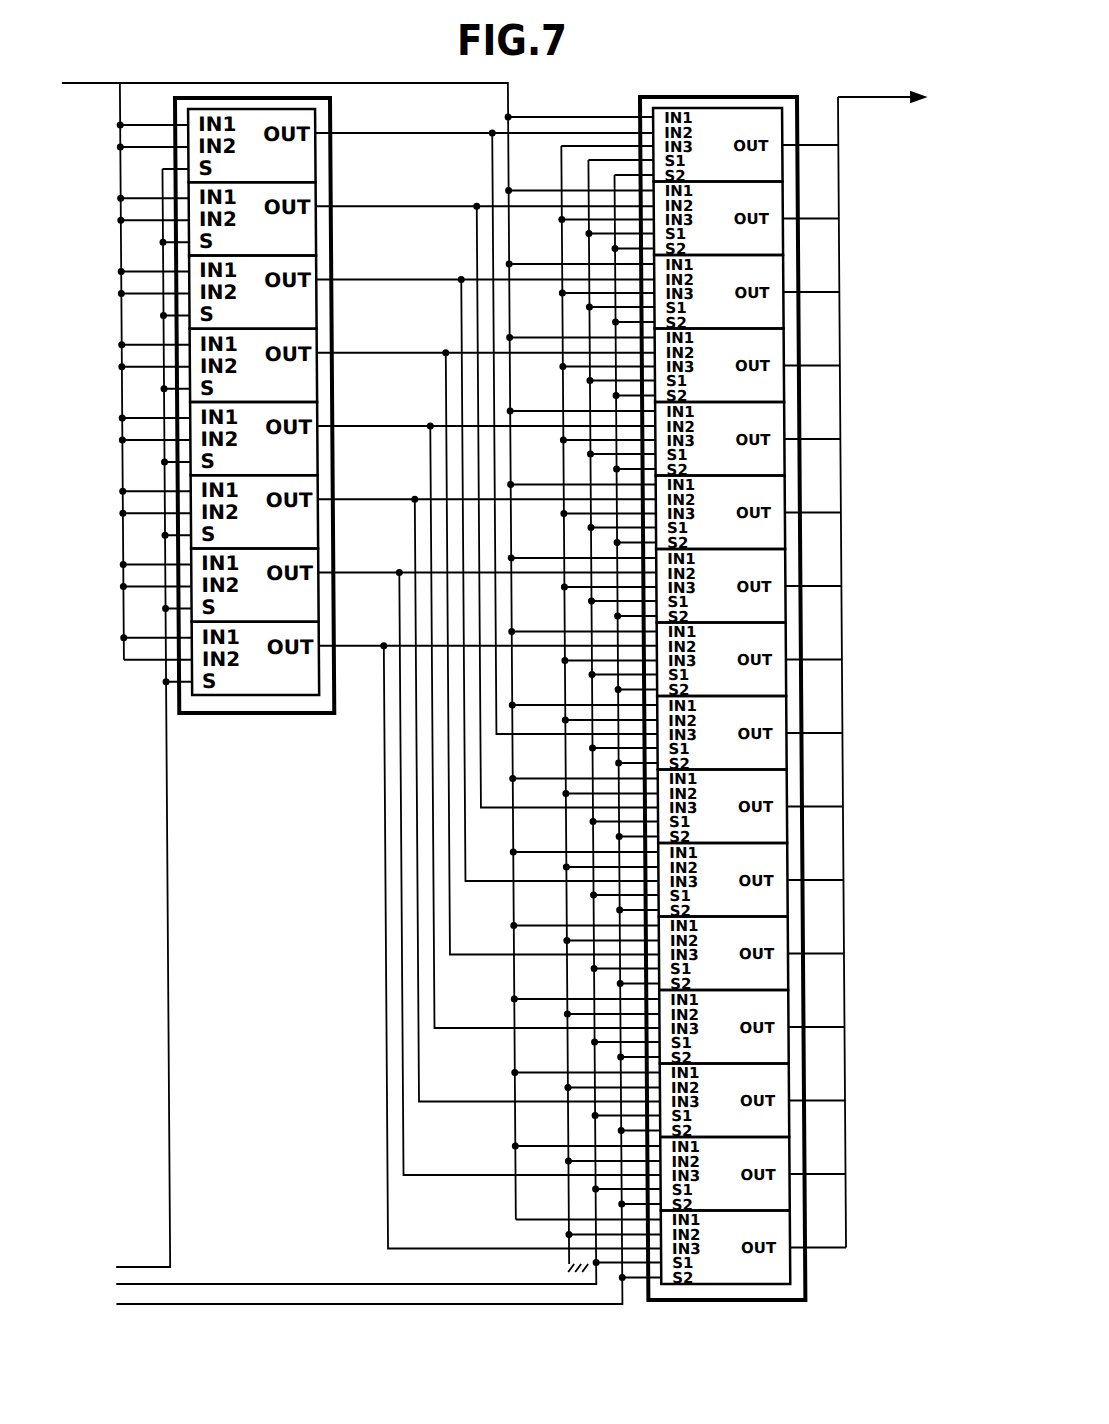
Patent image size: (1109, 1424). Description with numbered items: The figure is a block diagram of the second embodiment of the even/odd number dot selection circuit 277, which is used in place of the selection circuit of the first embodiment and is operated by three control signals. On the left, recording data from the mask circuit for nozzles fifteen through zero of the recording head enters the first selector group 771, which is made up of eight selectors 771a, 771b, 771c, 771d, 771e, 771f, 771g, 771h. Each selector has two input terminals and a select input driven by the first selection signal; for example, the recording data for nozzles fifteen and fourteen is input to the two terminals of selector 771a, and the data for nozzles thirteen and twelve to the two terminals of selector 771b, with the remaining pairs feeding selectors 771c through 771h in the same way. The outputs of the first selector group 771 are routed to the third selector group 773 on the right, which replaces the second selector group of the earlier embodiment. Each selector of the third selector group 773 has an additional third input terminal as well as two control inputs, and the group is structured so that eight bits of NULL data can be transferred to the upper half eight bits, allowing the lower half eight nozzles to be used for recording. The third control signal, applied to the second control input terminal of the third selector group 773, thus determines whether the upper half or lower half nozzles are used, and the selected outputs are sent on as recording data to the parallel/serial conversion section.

The even/odd number dot selection circuit 277 is at (645, 77).
The first selector group 771 is at (252, 713).
The selector 771a is at (315, 163).
The selector 771b is at (315, 236).
The selector 771c is at (315, 310).
The selector 771d is at (315, 383).
The selector 771e is at (315, 456).
The selector 771f is at (315, 529).
The selector 771g is at (322, 589).
The selector 771h is at (302, 695).
The third selector group 773 is at (797, 1260).